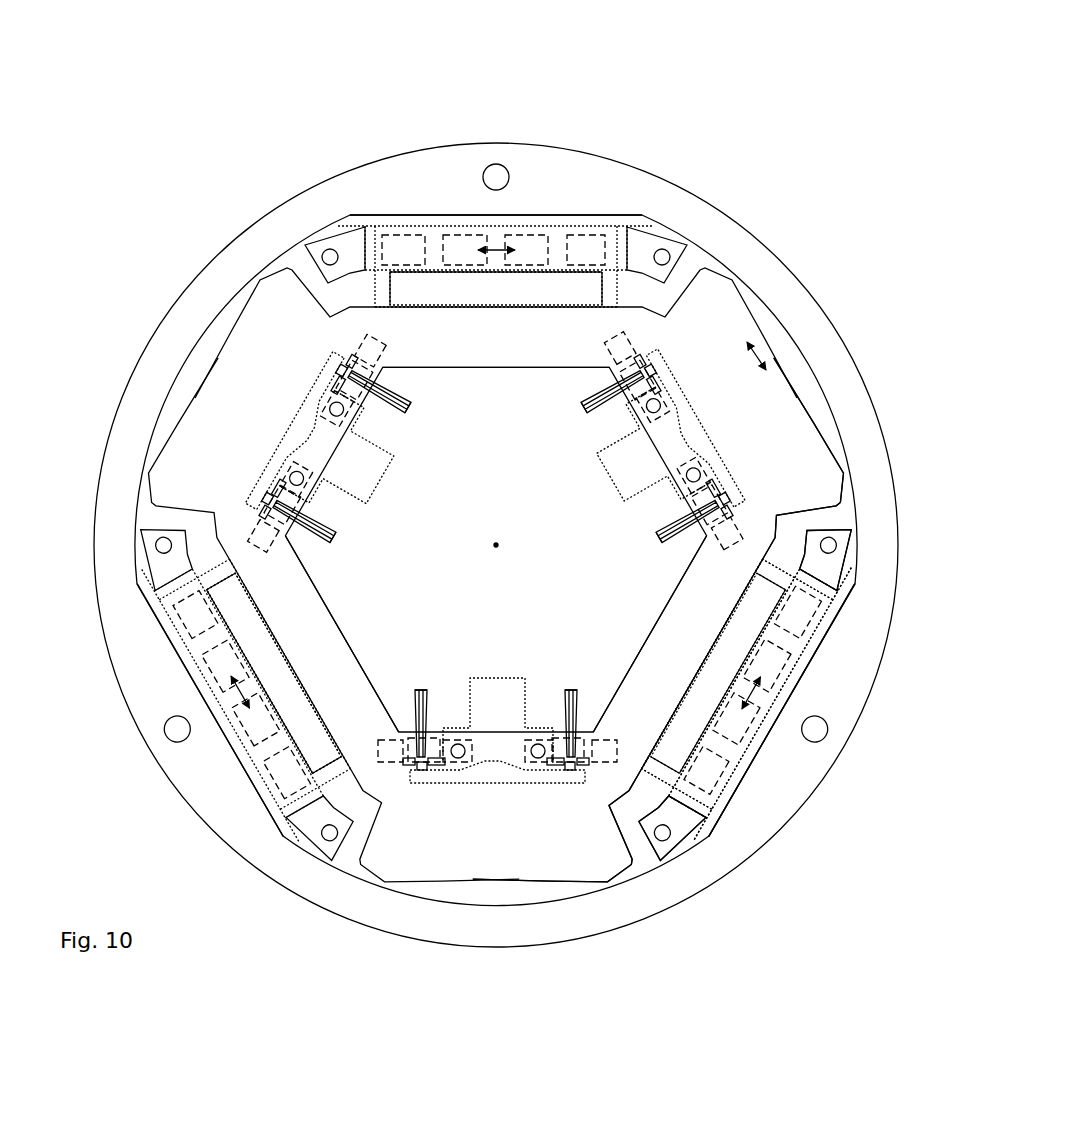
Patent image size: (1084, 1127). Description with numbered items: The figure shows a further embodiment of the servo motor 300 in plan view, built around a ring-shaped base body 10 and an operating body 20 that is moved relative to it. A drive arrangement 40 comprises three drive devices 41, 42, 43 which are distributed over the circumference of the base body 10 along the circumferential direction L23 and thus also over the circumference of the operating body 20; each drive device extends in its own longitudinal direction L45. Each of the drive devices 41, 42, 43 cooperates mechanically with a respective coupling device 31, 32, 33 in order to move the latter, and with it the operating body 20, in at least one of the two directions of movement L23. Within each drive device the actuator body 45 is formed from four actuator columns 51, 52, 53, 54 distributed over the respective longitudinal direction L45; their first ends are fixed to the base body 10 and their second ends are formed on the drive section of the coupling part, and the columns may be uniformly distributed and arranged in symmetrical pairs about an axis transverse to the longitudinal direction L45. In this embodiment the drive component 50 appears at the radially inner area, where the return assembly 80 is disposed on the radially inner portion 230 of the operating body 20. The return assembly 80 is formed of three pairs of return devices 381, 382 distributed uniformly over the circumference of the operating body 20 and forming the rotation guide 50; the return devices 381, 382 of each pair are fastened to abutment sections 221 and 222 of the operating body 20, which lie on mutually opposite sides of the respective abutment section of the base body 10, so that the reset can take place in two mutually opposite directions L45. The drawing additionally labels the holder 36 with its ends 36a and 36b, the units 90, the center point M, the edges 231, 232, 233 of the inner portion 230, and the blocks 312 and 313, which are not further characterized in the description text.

The base body 10 is at (697, 900).
The operating body 20 is at (540, 880).
The servo motor 300 is at (812, 96).
The coupling device 31 is at (197, 390).
The coupling device 32 is at (780, 362).
The coupling device 33 is at (560, 892).
The holder 36 is at (596, 288).
The first end of holder 36a is at (392, 288).
The second end of holder 36b is at (602, 292).
The drive arrangement 40 is at (318, 98).
The drive device 41 is at (200, 665).
The drive device 42 is at (468, 178).
The drive device 43 is at (818, 637).
The actuator body 45 is at (514, 272).
The drive component 50 is at (318, 360).
The actuator column 51 is at (392, 245).
The actuator column 52 is at (463, 235).
The actuator column 53 is at (530, 235).
The actuator column 54 is at (603, 235).
The return assembly 80 is at (400, 410).
The actuator unit 90 is at (280, 437).
The center M is at (503, 540).
The circumferential direction L23 is at (760, 355).
The longitudinal direction L45 is at (497, 262).
The abutment section 221 is at (292, 490).
The abutment section 222 is at (357, 405).
The radially inner portion 230 is at (445, 377).
The first side 231 is at (455, 535).
The second side 232 is at (496, 383).
The third side 233 is at (650, 652).
The first block 312 is at (385, 450).
The second block 313 is at (620, 478).
The return device 381 is at (333, 527).
The return device 382 is at (338, 380).